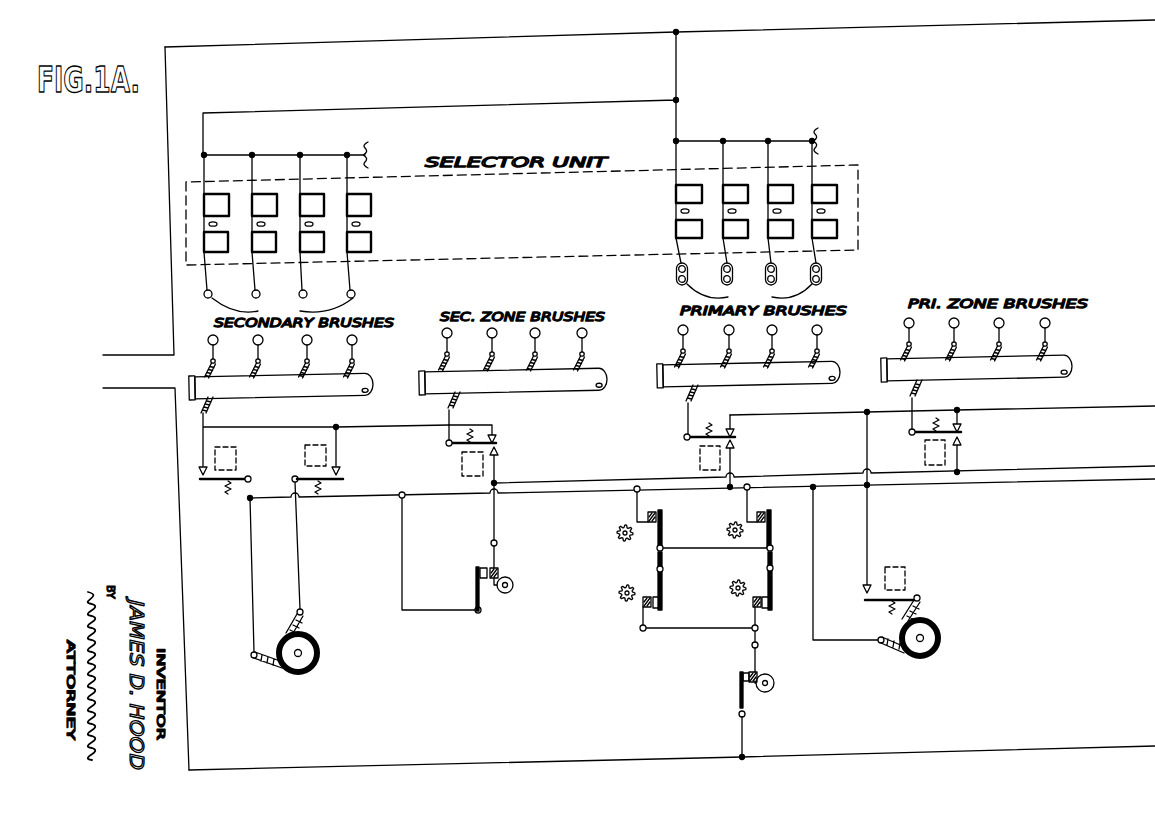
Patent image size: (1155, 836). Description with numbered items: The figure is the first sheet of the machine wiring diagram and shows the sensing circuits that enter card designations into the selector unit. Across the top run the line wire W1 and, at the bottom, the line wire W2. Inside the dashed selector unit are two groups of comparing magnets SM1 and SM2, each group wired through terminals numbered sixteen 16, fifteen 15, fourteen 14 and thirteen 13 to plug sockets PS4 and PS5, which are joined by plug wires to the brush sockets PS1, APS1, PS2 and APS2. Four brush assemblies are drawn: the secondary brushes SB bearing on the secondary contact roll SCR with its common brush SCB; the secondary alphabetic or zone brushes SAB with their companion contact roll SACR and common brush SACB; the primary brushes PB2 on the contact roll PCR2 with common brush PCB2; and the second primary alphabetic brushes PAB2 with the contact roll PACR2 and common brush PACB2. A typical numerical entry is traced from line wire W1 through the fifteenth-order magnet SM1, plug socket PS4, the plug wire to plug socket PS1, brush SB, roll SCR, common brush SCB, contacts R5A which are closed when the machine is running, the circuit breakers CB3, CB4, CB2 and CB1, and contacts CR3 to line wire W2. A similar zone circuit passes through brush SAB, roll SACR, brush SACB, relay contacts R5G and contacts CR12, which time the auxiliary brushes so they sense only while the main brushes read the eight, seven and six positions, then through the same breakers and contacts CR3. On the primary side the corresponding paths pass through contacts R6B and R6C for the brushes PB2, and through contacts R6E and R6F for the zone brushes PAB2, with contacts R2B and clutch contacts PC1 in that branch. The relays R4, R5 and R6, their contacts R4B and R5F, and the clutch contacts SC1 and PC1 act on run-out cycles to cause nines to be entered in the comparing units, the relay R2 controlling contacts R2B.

The line wire W1 is at (899, 30).
The line wire W2 is at (858, 752).
The comparing magnet SM1 is at (371, 238).
The comparing magnet SM2 is at (838, 224).
The plug socket position 13 is at (575, 270).
The plug socket position 14 is at (529, 270).
The plug socket position 15 is at (484, 270).
The plug socket position 16 is at (437, 270).
The plug socket PS4 is at (282, 307).
The plug socket PS5 is at (749, 293).
The plug socket PS1 is at (357, 340).
The secondary brushes SB is at (352, 360).
The common brush SCB is at (213, 403).
The secondary contact roll SCR is at (321, 387).
The plug socket APS1 is at (587, 333).
The secondary alphabetic brushes SAB is at (585, 355).
The common brush SACB is at (457, 397).
The contact roll SACR is at (558, 380).
The plug socket PS2 is at (822, 329).
The primary brushes PB2 is at (820, 352).
The common brush PCB2 is at (697, 395).
The contact roll PCR2 is at (800, 372).
The plug socket APS2 is at (1050, 323).
The second primary alphabetic brushes PAB2 is at (1047, 345).
The common brush PACB2 is at (922, 390).
The contact roll PACR2 is at (1042, 372).
The relay R5 is at (240, 452).
The relay R4 is at (305, 458).
The relay contacts R4B is at (345, 476).
The relay contacts R5A is at (203, 478).
The relay contacts R5F is at (500, 437).
The relay contacts R5G is at (500, 452).
The relay R6 is at (700, 456).
The relay contacts R6B is at (738, 435).
The relay contacts R6C is at (737, 447).
The relay contacts R6E is at (965, 430).
The relay contacts R6F is at (965, 441).
The relay R2 is at (905, 576).
The relay contacts R2B is at (866, 596).
The circuit breaker CB1 is at (648, 595).
The circuit breaker CB2 is at (762, 595).
The circuit breaker CB3 is at (768, 498).
The circuit breaker CB4 is at (655, 513).
The contacts CR12 is at (485, 567).
The contacts CR3 is at (742, 672).
The contacts SC1 is at (308, 660).
The contacts PC1 is at (930, 645).